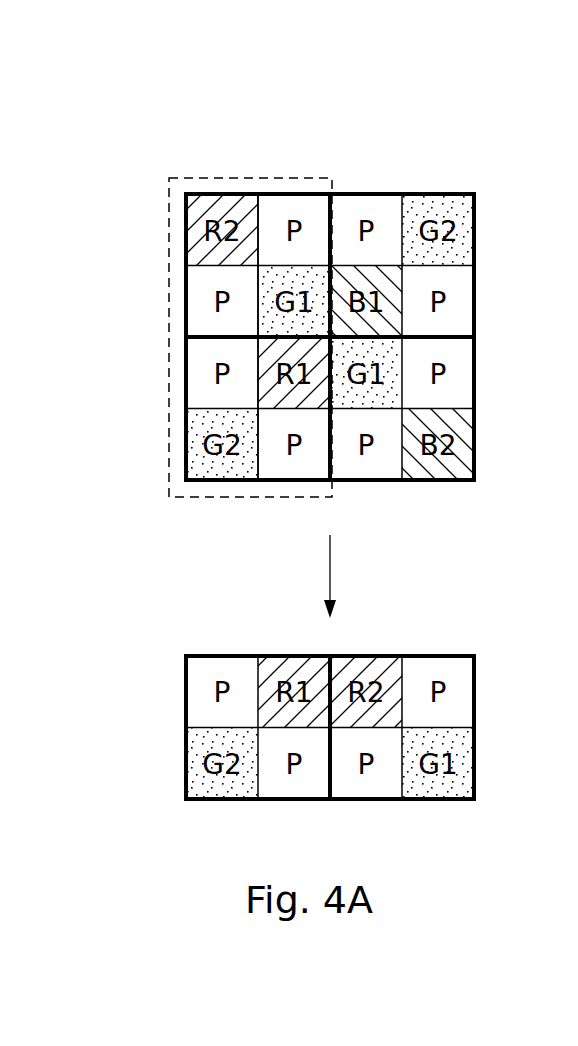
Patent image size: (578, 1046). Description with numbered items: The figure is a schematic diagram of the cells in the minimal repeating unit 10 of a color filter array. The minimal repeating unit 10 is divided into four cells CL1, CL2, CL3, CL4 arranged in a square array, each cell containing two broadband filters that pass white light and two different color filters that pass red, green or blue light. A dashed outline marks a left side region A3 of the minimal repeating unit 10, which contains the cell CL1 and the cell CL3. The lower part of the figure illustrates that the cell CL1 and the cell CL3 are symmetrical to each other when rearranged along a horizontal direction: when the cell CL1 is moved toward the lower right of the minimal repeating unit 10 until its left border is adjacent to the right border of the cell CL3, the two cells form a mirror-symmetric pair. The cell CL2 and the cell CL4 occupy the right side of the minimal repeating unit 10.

The minimal repeating unit 10 is at (102, 32).
The left side region A3 is at (169, 328).
The cell CL1 is at (258, 193).
The cell CL2 is at (422, 193).
The cell CL3 is at (258, 481).
The cell CL4 is at (422, 481).